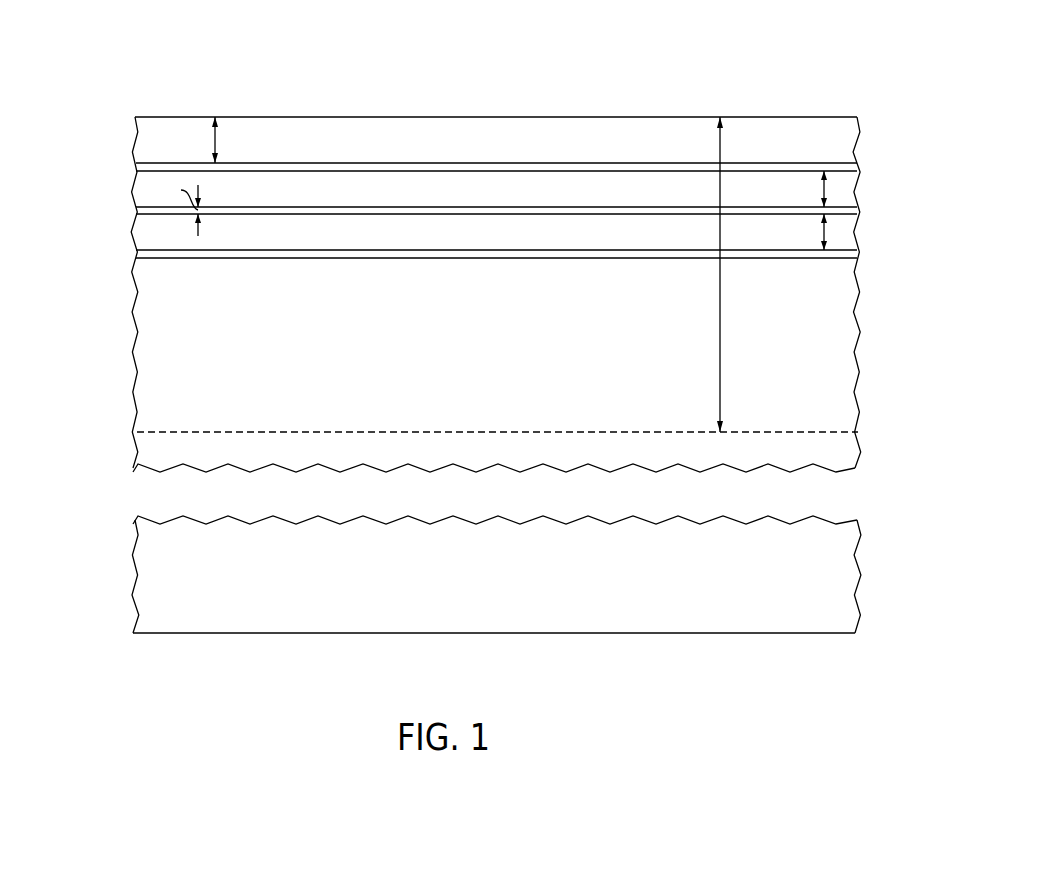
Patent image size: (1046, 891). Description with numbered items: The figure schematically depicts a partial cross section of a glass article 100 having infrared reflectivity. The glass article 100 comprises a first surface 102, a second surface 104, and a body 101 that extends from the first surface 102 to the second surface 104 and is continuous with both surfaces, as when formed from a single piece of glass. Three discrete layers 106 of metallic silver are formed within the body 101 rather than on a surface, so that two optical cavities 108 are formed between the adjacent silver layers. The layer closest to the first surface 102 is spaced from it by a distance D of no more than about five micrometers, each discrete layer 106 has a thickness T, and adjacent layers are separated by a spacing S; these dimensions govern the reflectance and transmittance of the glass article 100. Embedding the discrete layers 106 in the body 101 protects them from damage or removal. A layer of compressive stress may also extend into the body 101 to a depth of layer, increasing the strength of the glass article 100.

The glass article 100 is at (760, 79).
The body 101 is at (108, 314).
The first surface 102 is at (391, 117).
The second surface 104 is at (320, 633).
The discrete layers of metallic silver 106 is at (562, 172).
The optical cavity 108 is at (376, 200).